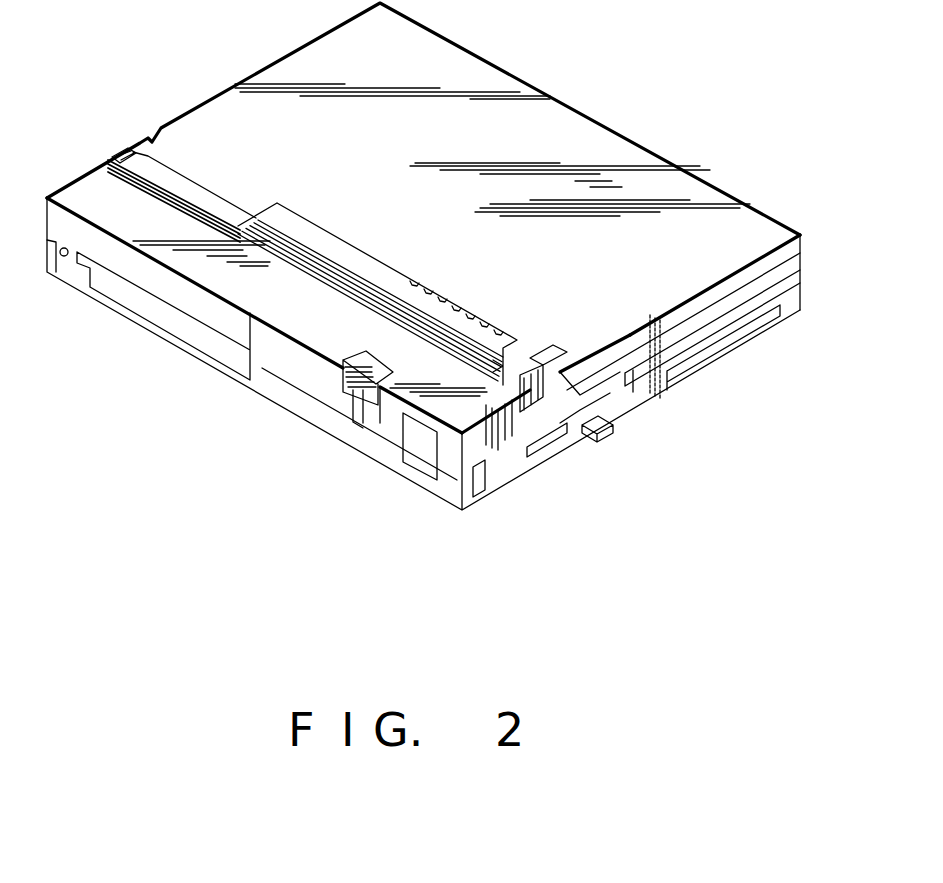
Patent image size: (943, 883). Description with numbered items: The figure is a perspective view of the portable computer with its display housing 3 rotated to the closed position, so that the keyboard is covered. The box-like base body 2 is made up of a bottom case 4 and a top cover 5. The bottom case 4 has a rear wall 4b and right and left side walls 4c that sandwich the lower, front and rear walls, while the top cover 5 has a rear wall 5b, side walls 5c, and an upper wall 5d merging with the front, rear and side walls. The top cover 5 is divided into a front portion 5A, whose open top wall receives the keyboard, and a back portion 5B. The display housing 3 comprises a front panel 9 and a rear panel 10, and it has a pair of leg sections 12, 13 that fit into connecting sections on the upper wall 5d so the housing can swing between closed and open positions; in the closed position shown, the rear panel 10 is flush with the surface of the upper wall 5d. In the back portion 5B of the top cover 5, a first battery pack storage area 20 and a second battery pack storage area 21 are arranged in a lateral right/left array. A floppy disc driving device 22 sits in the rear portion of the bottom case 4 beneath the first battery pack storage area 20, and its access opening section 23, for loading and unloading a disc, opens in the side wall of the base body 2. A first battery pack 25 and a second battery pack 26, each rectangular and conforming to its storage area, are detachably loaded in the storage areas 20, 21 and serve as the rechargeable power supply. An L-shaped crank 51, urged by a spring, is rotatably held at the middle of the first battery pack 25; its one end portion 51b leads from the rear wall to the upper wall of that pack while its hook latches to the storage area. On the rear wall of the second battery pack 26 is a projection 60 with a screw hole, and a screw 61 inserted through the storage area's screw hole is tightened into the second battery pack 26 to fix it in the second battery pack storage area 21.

The base body 2 is at (714, 403).
The display housing 3 is at (817, 122).
The bottom case 4 is at (640, 397).
The top cover 5 is at (607, 423).
The front panel 9 is at (800, 262).
The rear panel 10 is at (770, 257).
The leg section 12 is at (192, 183).
The leg section 13 is at (520, 377).
The first battery pack storage area 20 is at (427, 443).
The second battery pack storage area 21 is at (207, 320).
The floppy disc driving device 22 is at (582, 430).
The access opening section 23 is at (540, 447).
The first battery pack 25 is at (305, 332).
The second battery pack 26 is at (178, 259).
The rear wall 4b is at (447, 493).
The side wall 4c is at (693, 363).
The front portion 5A is at (787, 282).
The back portion 5B is at (485, 460).
The rear wall 5b is at (322, 427).
The side wall 5c is at (733, 317).
The upper wall 5d is at (347, 250).
The crank 51 is at (367, 413).
The one end portion 51b is at (350, 392).
The projection 60 is at (72, 268).
The screw 61 is at (67, 247).